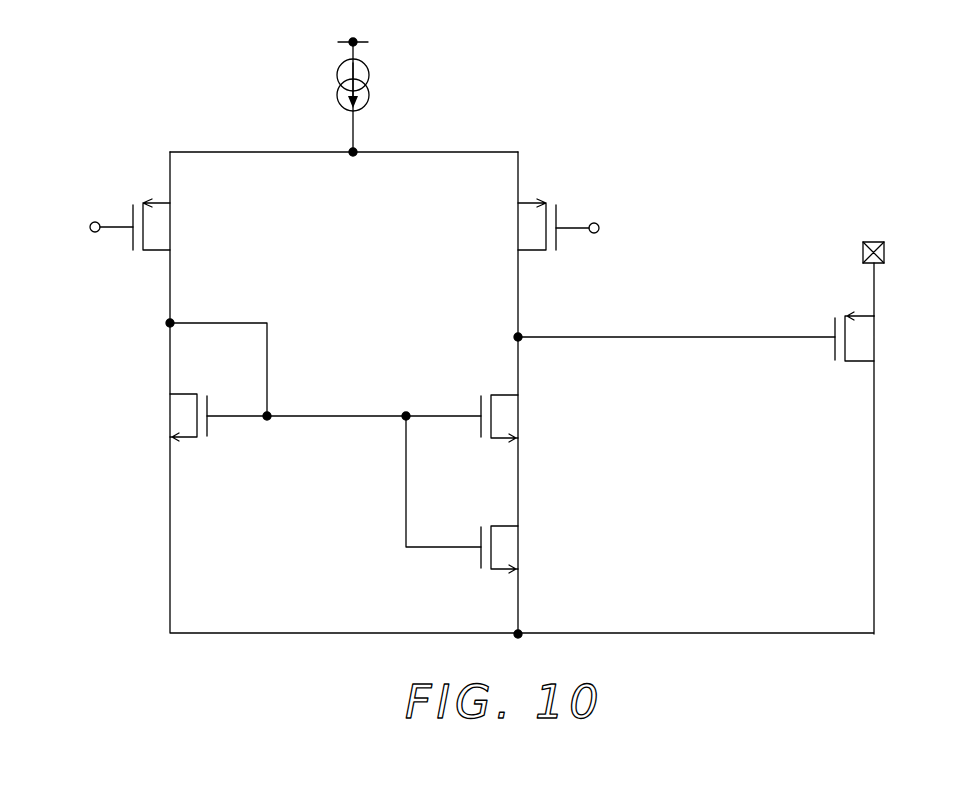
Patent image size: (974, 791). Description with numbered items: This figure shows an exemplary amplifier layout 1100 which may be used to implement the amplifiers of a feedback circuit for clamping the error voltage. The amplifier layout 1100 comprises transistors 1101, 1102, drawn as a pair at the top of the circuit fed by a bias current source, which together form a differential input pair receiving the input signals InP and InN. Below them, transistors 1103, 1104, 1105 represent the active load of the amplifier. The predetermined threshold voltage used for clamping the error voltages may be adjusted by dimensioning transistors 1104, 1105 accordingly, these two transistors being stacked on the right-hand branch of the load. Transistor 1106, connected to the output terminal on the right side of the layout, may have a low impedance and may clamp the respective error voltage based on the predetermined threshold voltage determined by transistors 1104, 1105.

The amplifier layout 1100 is at (518, 338).
The transistor 1101 is at (177, 242).
The transistor 1102 is at (510, 244).
The transistor 1103 is at (162, 432).
The transistor 1104 is at (523, 433).
The transistor 1105 is at (523, 565).
The transistor 1106 is at (880, 355).